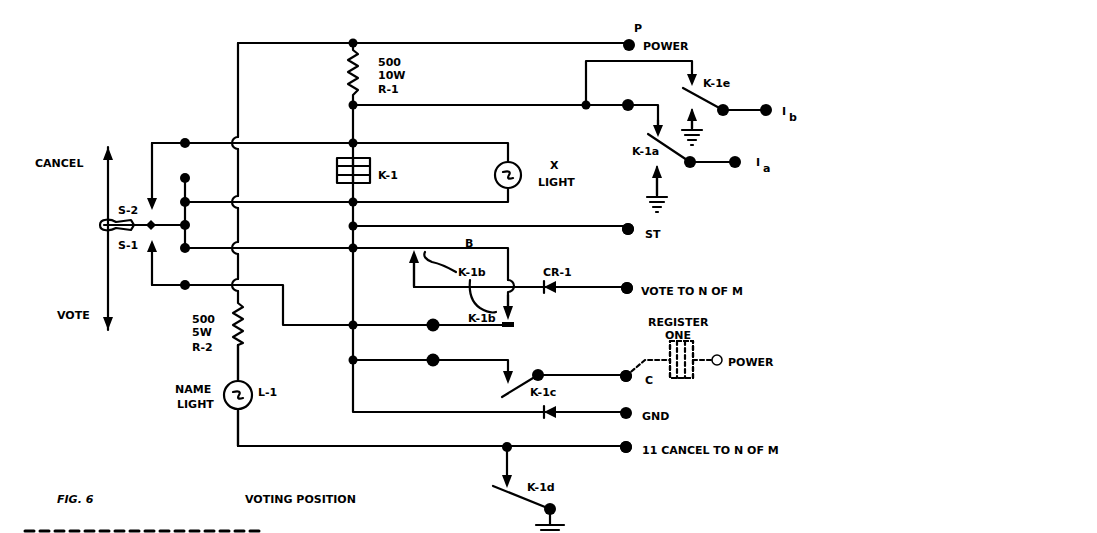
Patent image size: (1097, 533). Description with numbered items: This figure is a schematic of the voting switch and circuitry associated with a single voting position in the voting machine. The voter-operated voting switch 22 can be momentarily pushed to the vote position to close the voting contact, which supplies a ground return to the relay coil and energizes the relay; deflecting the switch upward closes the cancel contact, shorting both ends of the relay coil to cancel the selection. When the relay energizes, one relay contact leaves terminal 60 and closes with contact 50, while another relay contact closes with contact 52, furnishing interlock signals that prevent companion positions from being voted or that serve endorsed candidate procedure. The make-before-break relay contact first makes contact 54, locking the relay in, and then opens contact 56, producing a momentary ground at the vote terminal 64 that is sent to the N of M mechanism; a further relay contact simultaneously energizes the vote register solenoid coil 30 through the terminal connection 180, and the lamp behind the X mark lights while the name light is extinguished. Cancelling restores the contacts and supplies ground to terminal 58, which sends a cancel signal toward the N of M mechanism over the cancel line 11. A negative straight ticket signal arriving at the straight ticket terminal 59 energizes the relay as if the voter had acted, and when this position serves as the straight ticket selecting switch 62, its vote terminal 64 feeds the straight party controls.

The voting switch 22 is at (101, 223).
The switch 62 is at (101, 228).
The contact 52 is at (683, 115).
The terminal 60 is at (648, 124).
The contact 50 is at (686, 168).
The contact 56 is at (413, 261).
The contact 54 is at (521, 310).
The straight ticket terminal 59 is at (632, 236).
The vote terminal 64 is at (631, 286).
The terminal connection 180 is at (624, 370).
The vote register solenoid coil 30 is at (686, 350).
The terminal 58 is at (630, 453).
The cancel line 11 is at (608, 450).